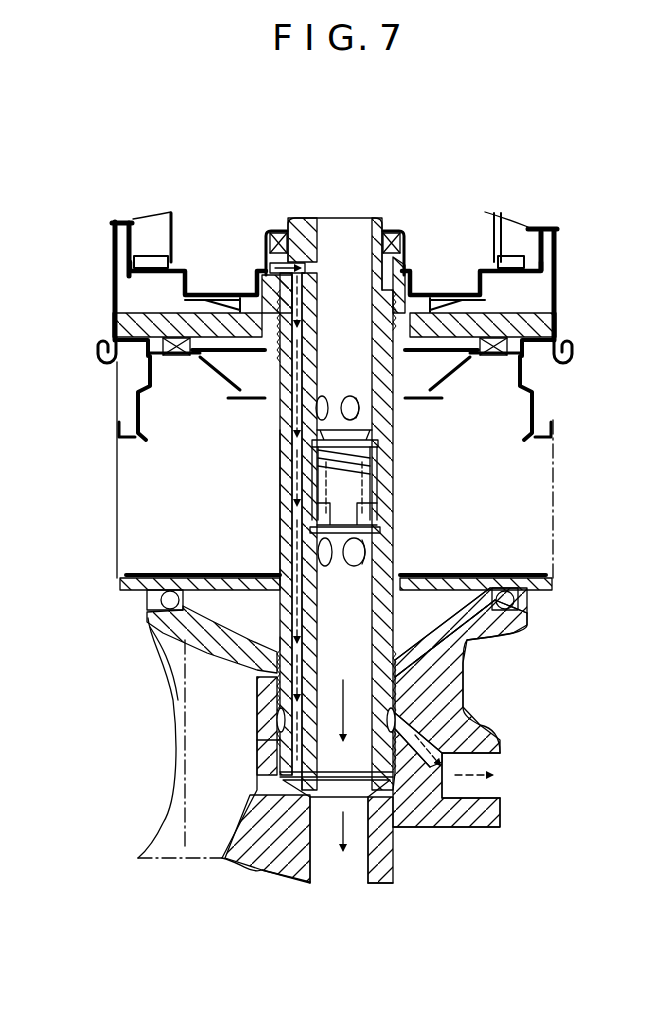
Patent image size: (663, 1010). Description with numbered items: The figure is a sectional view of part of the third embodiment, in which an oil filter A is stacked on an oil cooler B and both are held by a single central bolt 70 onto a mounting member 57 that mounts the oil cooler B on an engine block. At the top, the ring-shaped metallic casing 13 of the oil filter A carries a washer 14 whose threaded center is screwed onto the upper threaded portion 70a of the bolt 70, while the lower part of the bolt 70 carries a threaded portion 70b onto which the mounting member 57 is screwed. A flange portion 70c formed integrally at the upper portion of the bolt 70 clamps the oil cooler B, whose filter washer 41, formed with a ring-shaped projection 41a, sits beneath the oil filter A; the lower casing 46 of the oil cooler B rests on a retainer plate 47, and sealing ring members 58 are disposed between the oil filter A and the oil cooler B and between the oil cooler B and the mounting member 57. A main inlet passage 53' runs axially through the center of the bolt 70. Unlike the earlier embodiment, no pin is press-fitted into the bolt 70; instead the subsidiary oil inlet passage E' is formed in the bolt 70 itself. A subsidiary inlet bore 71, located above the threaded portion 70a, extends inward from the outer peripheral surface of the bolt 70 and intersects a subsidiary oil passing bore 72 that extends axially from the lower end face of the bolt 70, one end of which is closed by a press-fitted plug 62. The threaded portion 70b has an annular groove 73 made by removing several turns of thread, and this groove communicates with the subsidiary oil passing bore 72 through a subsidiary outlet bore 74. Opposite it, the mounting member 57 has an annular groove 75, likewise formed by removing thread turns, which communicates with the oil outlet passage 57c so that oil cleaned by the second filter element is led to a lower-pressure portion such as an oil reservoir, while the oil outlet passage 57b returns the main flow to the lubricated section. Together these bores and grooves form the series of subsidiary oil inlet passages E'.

The oil filter A is at (100, 248).
The oil cooler B is at (106, 506).
The subsidiary oil inlet passage E' is at (263, 518).
The ring-shaped metallic casing 13 is at (566, 344).
The washer 14 is at (528, 318).
The filter washer 41 is at (545, 397).
The ring-shaped projection 41a is at (534, 346).
The lower casing 46 is at (528, 578).
The retainer plate 47 is at (525, 590).
The main inlet passage 53' is at (345, 505).
The mounting member 57 is at (412, 820).
The oil outlet passage 57b is at (322, 862).
The oil outlet passage 57c is at (496, 792).
The sealing ring member 58 is at (152, 364).
The plug 62 is at (280, 775).
The bolt 70 is at (294, 228).
The threaded portion 70a is at (243, 280).
The threaded portion 70b is at (280, 690).
The flange portion 70c is at (162, 403).
The subsidiary inlet bore 71 is at (270, 275).
The subsidiary oil passing bore 72 is at (286, 545).
The annular groove 73 is at (280, 736).
The subsidiary outlet bore 74 is at (280, 719).
The annular groove 75 is at (436, 702).